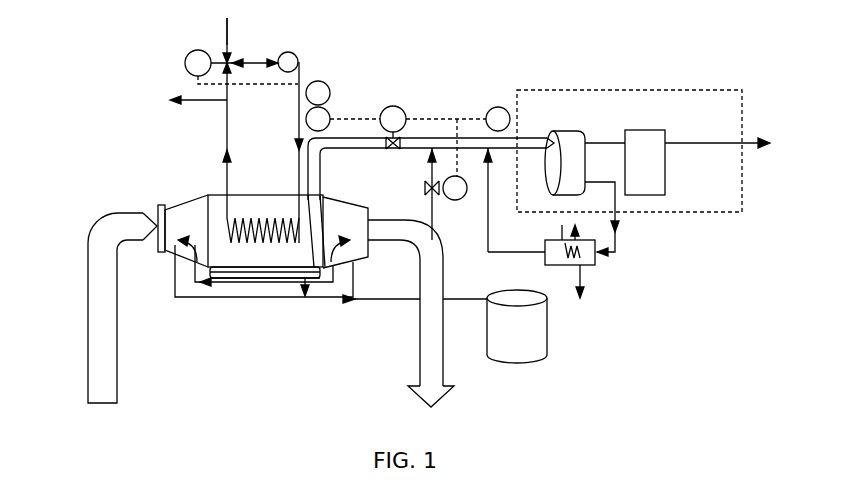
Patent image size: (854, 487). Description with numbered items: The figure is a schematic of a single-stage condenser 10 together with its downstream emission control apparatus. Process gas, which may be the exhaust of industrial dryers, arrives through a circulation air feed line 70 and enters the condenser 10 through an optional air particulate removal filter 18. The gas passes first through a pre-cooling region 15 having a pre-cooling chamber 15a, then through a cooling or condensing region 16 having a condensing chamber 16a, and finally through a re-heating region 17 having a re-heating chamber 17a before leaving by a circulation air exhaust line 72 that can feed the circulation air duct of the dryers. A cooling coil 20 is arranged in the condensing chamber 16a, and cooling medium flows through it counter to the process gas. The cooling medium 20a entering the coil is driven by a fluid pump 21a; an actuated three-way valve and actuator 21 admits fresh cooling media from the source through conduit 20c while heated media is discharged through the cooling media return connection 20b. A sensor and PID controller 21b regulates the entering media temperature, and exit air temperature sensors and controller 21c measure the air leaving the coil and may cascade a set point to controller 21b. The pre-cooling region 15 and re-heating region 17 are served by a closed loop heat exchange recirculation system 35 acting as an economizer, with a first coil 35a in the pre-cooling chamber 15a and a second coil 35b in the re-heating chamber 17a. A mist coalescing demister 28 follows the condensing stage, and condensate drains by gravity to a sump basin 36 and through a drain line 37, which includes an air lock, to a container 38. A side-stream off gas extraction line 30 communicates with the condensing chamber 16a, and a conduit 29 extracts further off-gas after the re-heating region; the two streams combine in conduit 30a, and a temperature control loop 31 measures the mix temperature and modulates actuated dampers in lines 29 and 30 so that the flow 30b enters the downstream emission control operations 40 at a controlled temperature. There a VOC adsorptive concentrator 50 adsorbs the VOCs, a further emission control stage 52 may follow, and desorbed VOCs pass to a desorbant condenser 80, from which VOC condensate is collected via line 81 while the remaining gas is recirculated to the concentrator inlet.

The condenser 10 is at (146, 120).
The pre-cooling region 15 is at (183, 215).
The pre-cooling chamber 15a is at (110, 166).
The cooling or condensing region 16 is at (205, 192).
The condensing chamber 16a is at (236, 268).
The re-heating region 17 is at (330, 197).
The re-heating chamber 17a is at (348, 214).
The air particulate removal filter 18 is at (158, 212).
The cooling coil 20 is at (232, 150).
The cooling medium 20a is at (233, 164).
The cooling media return connection 20b is at (190, 100).
The conduit from cooling media source 20c is at (228, 40).
The valve and actuator 21 is at (186, 58).
The fluid pump 21a is at (298, 60).
The sensor and PID controller 21b is at (329, 88).
The exit air temperature sensors and controller 21c is at (329, 113).
The mist coalescing panel 28 is at (314, 290).
The conduit 29 is at (434, 210).
The side-stream off gas extraction line 30 is at (336, 138).
The conduit 30a is at (462, 136).
The flow 30b is at (504, 106).
The temperature control loop 31 is at (395, 106).
The closed loop heat exchange recirculation system 35 is at (196, 298).
The first coil 35a is at (185, 262).
The second coil 35b is at (346, 250).
The sump basin 36 is at (260, 268).
The drain line 37 is at (395, 304).
The container 38 is at (548, 355).
The downstream emission control operations 40 is at (549, 90).
The VOC adsorptive concentrator 50 is at (571, 132).
The further emission or pollution control stage 52 is at (648, 130).
The circulation air feed line 70 is at (96, 330).
The circulation air exhaust line 72 is at (418, 362).
The desorbant condenser 80 is at (597, 267).
The line 81 is at (588, 280).